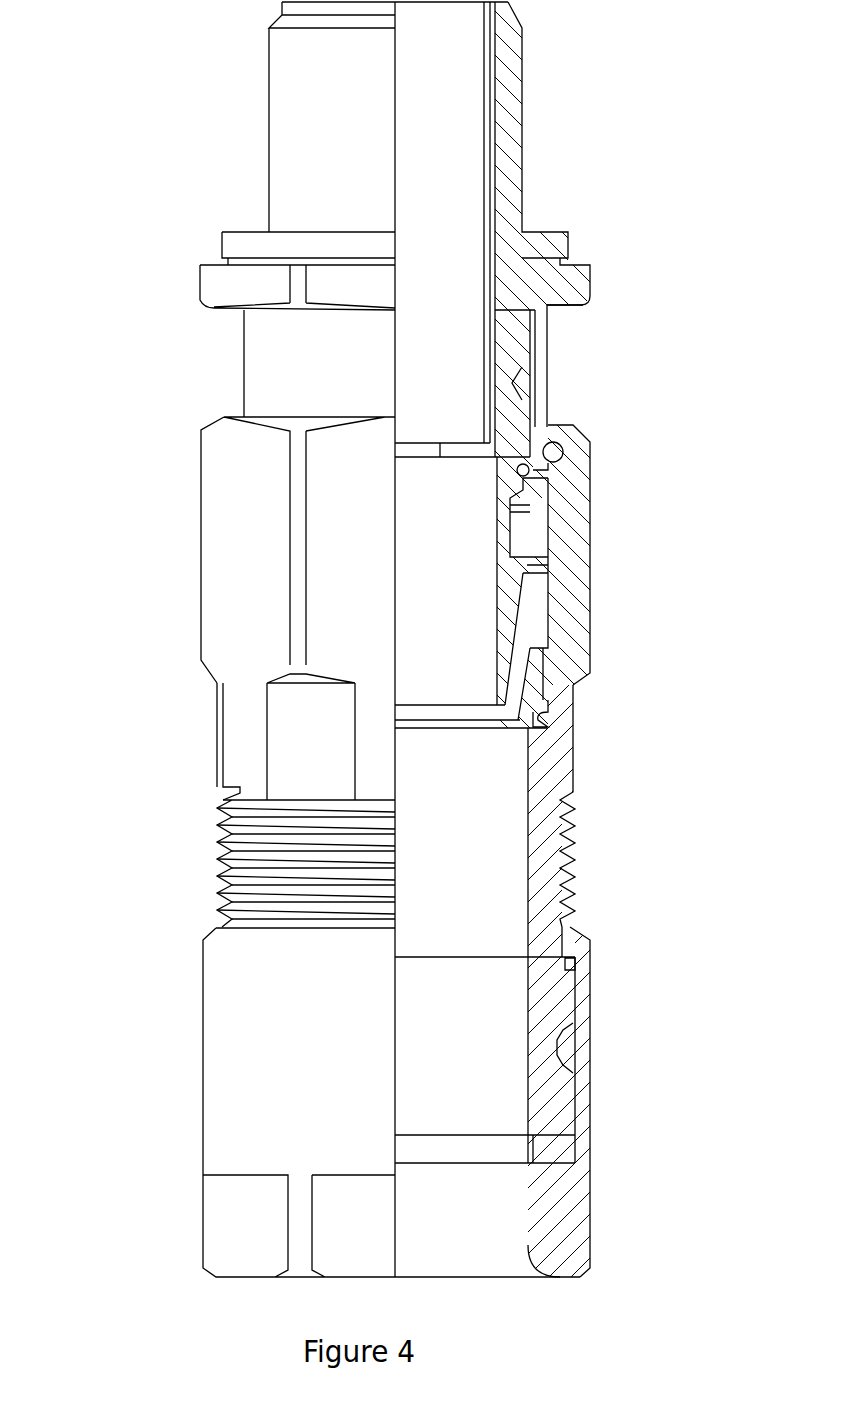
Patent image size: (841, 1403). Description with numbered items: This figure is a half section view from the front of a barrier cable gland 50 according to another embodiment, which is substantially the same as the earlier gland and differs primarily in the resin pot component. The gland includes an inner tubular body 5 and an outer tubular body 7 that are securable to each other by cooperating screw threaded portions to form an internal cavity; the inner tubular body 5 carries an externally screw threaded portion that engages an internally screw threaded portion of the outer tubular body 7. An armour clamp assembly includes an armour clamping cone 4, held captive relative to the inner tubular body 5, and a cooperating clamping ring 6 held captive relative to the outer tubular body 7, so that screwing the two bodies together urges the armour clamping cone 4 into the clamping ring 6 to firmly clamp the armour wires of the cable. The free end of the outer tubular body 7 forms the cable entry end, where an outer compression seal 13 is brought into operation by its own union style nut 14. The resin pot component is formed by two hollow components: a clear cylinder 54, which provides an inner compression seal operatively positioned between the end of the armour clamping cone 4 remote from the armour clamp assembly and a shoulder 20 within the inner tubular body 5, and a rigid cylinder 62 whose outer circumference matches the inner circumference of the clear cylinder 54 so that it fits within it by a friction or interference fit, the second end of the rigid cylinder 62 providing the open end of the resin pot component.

The barrier cable gland 50 is at (108, 155).
The rigid cylinder 62 is at (490, 61).
The inner tubular body 5 is at (508, 159).
The shoulder 20 is at (513, 305).
The clear cylinder 54 is at (512, 337).
The armour clamping cone 4 is at (512, 576).
The clamping ring 6 is at (532, 686).
The outer tubular body 7 is at (542, 756).
The outer compression seal 13 is at (543, 1008).
The union style nut 14 is at (567, 1233).